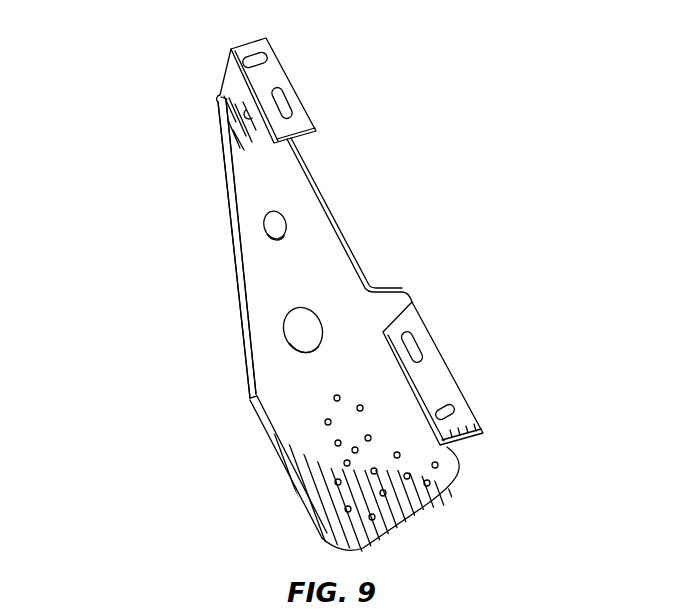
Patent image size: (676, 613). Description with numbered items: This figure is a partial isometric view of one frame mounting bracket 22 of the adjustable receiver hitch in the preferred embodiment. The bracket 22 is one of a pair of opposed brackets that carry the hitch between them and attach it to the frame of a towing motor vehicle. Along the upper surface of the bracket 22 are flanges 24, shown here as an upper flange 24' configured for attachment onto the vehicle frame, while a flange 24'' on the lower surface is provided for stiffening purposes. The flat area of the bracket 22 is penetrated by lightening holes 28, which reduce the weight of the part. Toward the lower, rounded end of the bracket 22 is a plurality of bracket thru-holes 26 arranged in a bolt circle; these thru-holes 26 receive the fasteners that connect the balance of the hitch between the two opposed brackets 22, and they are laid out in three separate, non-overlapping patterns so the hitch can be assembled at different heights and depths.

The frame mounting bracket 22 is at (350, 260).
The flanges 24 is at (485, 373).
The upper flange 24' is at (338, 90).
The lower flange 24'' is at (148, 249).
The bracket thru-holes 26 is at (443, 503).
The lightening holes 28 is at (290, 343).